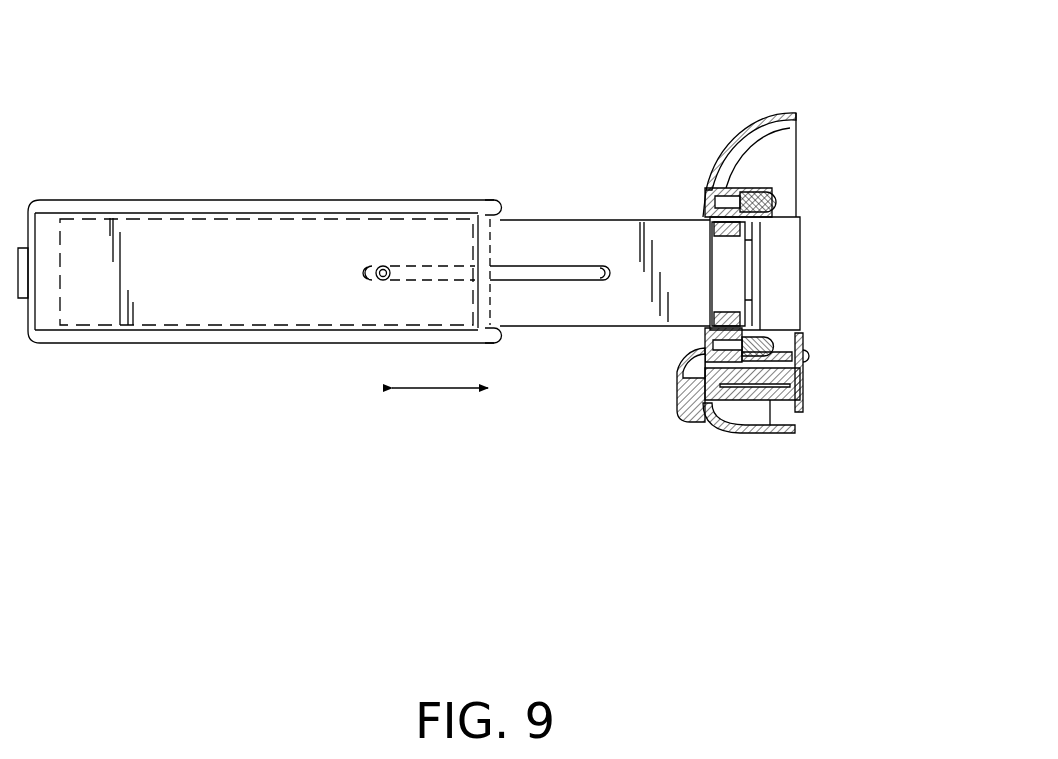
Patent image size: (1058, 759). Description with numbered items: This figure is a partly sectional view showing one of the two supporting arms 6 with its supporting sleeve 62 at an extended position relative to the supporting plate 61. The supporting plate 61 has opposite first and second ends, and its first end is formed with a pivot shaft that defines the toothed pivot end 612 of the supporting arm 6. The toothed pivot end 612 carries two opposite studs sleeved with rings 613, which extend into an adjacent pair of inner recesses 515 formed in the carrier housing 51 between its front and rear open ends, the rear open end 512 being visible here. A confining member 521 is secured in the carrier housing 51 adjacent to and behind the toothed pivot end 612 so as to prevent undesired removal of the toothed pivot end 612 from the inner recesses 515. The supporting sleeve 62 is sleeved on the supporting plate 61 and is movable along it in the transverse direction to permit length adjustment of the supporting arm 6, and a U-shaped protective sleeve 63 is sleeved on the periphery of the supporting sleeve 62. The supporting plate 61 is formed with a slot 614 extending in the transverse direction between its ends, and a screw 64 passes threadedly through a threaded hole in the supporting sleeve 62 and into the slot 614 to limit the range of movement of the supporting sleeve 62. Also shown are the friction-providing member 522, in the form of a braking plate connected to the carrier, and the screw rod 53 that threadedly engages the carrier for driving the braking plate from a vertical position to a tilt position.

The supporting arm 6 is at (540, 190).
The U-shaped protective sleeve 63 is at (238, 200).
The supporting sleeve 62 is at (205, 305).
The screw 64 is at (378, 283).
The slot 614 is at (547, 277).
The supporting plate 61 is at (610, 218).
The ring 613 is at (705, 210).
The inner recess 515 is at (710, 190).
The carrier housing 51 is at (716, 170).
The confining member 521 is at (760, 190).
The rear open end 512 is at (797, 166).
The toothed pivot end 612 is at (750, 232).
The friction-providing member 522 is at (800, 407).
The screw rod 53 is at (680, 428).